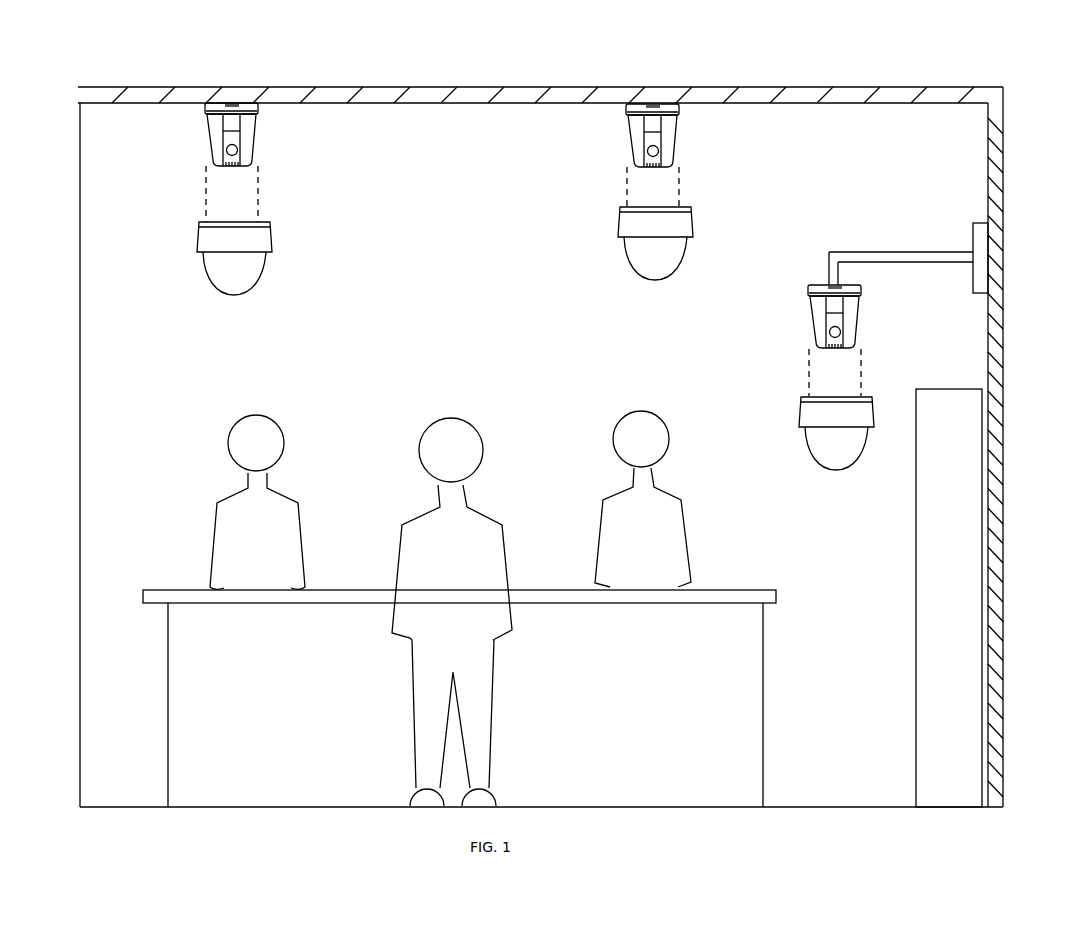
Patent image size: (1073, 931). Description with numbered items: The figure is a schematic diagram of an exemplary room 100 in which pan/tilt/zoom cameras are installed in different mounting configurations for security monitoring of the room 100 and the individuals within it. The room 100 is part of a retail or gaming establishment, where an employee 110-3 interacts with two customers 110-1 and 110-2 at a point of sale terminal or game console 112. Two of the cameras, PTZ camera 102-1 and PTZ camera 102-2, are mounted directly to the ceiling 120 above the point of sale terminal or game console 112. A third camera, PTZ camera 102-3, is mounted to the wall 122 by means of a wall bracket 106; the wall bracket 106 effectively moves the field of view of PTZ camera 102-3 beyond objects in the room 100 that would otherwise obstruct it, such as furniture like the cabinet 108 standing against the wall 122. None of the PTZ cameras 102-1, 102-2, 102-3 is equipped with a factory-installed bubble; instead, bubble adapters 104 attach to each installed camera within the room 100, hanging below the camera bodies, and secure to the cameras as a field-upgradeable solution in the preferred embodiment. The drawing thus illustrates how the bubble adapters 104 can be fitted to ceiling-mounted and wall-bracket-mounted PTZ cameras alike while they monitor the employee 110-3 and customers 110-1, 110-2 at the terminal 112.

The room 100 is at (242, 59).
The PTZ camera 102-1 is at (250, 132).
The PTZ camera 102-2 is at (667, 136).
The PTZ camera 102-3 is at (817, 317).
The bubble adapter 104 is at (285, 222).
The wall bracket 106 is at (924, 252).
The cabinet 108 is at (947, 537).
The customer 110-1 is at (227, 540).
The customer 110-2 is at (623, 500).
The employee 110-3 is at (420, 618).
The point of sale terminal or game console 112 is at (210, 687).
The ceiling 120 is at (558, 95).
The wall 122 is at (997, 394).